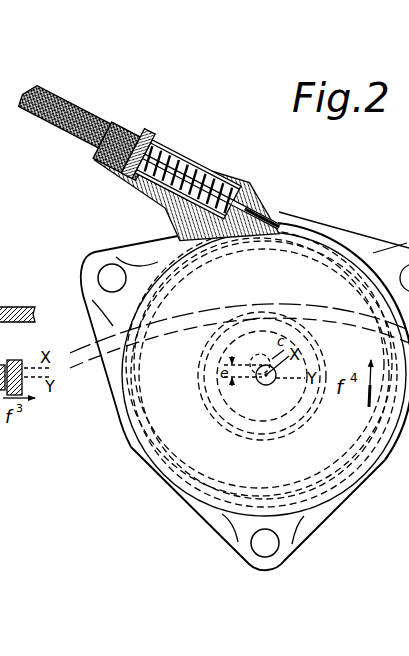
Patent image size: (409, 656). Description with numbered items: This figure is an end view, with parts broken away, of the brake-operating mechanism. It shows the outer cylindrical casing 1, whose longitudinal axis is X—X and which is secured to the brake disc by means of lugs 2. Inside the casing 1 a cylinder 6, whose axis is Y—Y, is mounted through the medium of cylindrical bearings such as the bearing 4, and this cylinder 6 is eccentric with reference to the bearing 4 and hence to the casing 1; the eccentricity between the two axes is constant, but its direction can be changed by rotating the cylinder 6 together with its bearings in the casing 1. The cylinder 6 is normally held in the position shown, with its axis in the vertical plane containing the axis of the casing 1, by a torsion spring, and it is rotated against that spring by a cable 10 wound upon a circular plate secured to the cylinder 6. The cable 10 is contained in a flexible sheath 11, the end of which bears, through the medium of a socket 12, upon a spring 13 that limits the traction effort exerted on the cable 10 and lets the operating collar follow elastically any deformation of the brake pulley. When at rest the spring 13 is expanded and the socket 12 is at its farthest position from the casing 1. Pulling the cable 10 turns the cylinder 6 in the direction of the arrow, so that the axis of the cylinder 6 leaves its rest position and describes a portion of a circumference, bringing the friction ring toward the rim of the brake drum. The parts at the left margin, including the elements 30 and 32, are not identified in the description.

The outer cylindrical casing 1 is at (341, 246).
The lugs 2 is at (96, 264).
The cylindrical bearing 4 is at (130, 392).
The cylinder 6 is at (143, 411).
The cable 10 is at (252, 213).
The flexible sheath 11 is at (82, 114).
The socket 12 is at (146, 136).
The spring 13 is at (177, 163).
The bar 30 is at (17, 324).
The block 32 is at (17, 361).